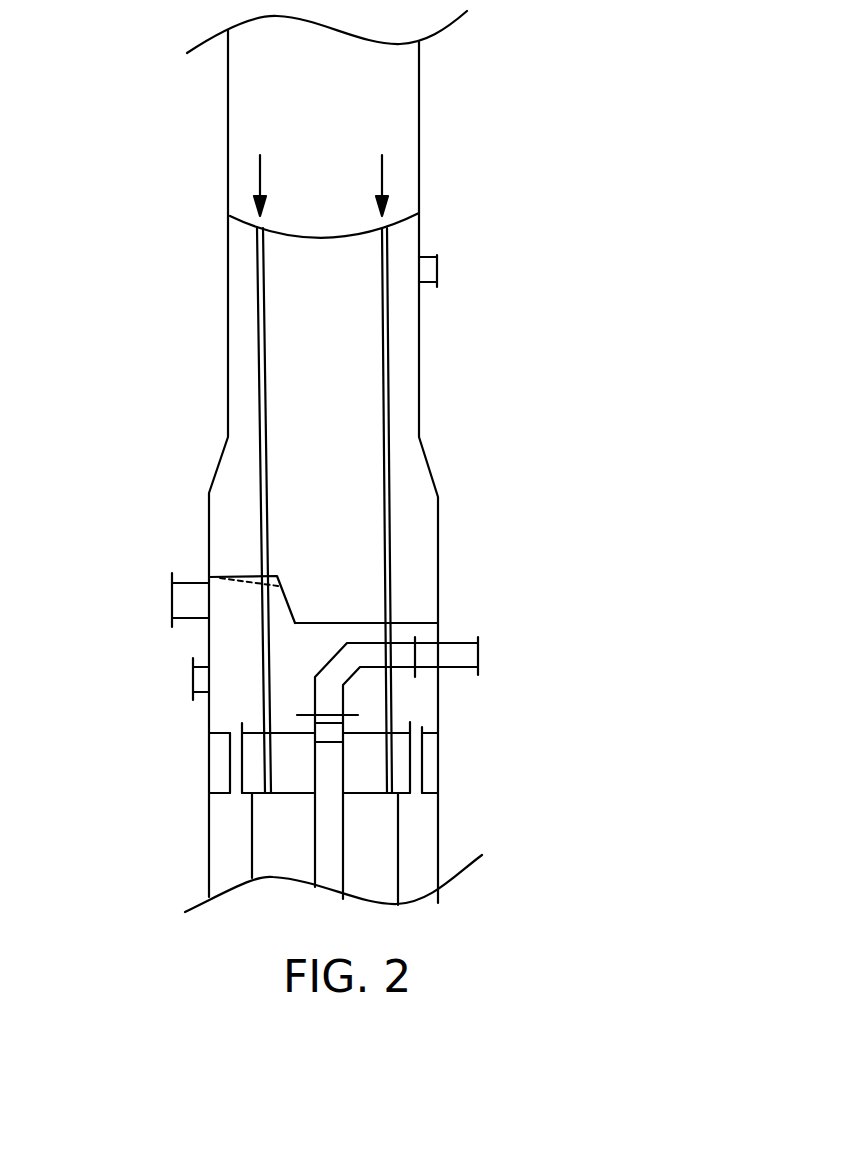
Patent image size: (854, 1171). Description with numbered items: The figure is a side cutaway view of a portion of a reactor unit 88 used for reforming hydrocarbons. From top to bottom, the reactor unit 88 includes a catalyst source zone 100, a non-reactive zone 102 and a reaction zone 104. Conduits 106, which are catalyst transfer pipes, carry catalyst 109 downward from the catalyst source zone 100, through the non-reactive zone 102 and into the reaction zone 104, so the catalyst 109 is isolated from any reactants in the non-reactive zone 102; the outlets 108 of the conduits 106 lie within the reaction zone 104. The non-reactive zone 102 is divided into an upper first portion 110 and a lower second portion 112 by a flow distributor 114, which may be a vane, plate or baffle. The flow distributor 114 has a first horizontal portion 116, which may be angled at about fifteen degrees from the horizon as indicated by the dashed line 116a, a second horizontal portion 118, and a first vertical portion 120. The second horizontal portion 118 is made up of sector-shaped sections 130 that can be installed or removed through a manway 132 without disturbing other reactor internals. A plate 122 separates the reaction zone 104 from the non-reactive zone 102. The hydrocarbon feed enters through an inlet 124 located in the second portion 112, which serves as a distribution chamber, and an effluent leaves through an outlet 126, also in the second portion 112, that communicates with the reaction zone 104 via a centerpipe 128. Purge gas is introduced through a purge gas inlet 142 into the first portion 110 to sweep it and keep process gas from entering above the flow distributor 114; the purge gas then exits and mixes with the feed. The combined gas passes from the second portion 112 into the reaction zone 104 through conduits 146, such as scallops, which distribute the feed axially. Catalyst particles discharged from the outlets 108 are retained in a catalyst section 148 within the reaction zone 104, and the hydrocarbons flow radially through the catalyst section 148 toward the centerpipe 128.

The reactor unit 88 is at (493, 110).
The catalyst source zone 100 is at (241, 113).
The non-reactive zone 102 is at (580, 177).
The reaction zone 104 is at (578, 732).
The conduits 106 is at (257, 278).
The outlets 108 is at (269, 795).
The catalyst 109 is at (260, 171).
The first portion 110 is at (300, 497).
The second portion 112 is at (247, 662).
The flow distributor 114 is at (416, 620).
The first horizontal portion 116 is at (222, 577).
The dashed line 116a is at (247, 577).
The second horizontal portion 118 is at (337, 622).
The first vertical portion 120 is at (288, 605).
The plate 122 is at (373, 733).
The inlet 124 is at (172, 593).
The outlet 126 is at (470, 643).
The centerpipe 128 is at (345, 760).
The sections 130 is at (661, 688).
The manway 132 is at (200, 678).
The purge gas inlet 142 is at (432, 256).
The conduits 146 is at (235, 723).
The catalyst section 148 is at (285, 832).